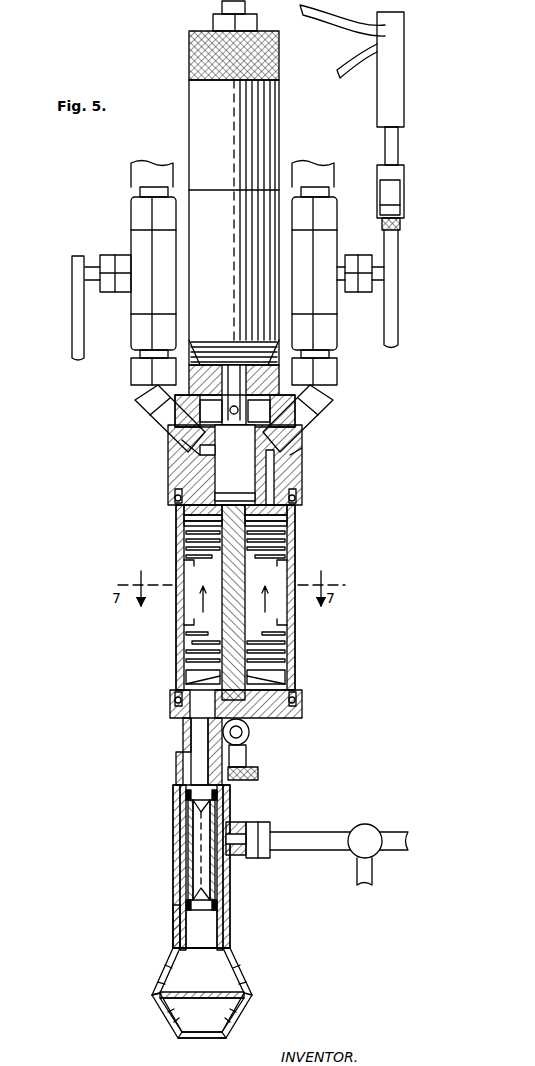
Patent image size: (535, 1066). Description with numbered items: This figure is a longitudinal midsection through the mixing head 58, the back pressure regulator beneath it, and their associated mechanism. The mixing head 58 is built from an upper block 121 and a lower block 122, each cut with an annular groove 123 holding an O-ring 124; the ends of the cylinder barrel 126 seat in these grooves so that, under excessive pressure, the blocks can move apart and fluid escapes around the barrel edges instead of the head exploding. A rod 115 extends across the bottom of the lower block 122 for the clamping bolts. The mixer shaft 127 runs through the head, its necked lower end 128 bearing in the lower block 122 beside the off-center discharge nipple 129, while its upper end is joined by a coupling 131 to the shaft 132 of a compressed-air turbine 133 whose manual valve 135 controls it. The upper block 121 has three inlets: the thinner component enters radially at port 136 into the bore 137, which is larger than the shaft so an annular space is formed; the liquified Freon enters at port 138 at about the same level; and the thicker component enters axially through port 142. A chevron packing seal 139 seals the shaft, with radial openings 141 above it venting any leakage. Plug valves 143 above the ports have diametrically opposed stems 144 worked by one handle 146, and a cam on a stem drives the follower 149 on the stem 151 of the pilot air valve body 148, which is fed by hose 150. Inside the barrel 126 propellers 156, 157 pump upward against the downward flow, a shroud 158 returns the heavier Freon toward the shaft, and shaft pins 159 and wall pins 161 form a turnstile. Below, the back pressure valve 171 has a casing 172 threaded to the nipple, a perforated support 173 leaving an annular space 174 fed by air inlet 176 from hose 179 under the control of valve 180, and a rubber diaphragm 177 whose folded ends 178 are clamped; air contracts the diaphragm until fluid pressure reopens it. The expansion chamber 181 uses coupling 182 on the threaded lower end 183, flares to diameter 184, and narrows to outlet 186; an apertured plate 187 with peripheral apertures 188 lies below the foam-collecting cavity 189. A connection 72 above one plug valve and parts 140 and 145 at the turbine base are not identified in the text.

The mixing head 58 is at (300, 512).
The valve 72 is at (314, 170).
The rod 115 is at (248, 740).
The upper block 121 is at (172, 478).
The lower block 122 is at (283, 718).
The annular groove 123 is at (296, 491).
The O-ring 124 is at (296, 498).
The cylinder barrel 126 is at (294, 636).
The mixer shaft 127 is at (240, 602).
The lower end of shaft 128 is at (248, 719).
The discharge nipple 129 is at (185, 740).
The coupling 131 is at (246, 416).
The turbine shaft 132 is at (243, 352).
The air turbine 133 is at (238, 252).
The manual valve 135 is at (192, 52).
The thinner component port 136 is at (200, 452).
The bore 137 is at (222, 497).
The Freon port 138 is at (292, 462).
The chevron packing seal 139 is at (215, 442).
The thread 140 is at (210, 352).
The radial openings 141 is at (190, 421).
The thicker component port 142 is at (275, 472).
The plug valves 143 is at (140, 250).
The valve stems 144 is at (98, 268).
The lower body 145 is at (197, 406).
The actuating handle 146 is at (78, 342).
The pilot air valve body 148 is at (382, 90).
The cam follower 149 is at (388, 200).
The hose 150 is at (352, 30).
The pilot valve stem 151 is at (392, 145).
The upper agitator propeller 156 is at (200, 524).
The lower agitator propeller 157 is at (210, 682).
The annular shroud 158 is at (205, 519).
The radially extending pins 159 is at (286, 549).
The radially inward extending pins 161 is at (190, 643).
The back pressure valve 171 is at (171, 880).
The outer tubular casing 172 is at (190, 893).
The tubular perforated support 173 is at (180, 764).
The annular space 174 is at (177, 818).
The compressed air inlet 176 is at (238, 828).
The resilient tubular diaphragm 177 is at (190, 856).
The diaphragm ends 178 is at (187, 794).
The air hose 179 is at (320, 847).
The air control valve 180 is at (357, 853).
The expansion chamber 181 is at (245, 970).
The coupling 182 is at (178, 940).
The lower end of valve body 183 is at (219, 926).
The increased diameter 184 is at (156, 994).
The outlet diameter 186 is at (172, 1040).
The apertured plate 187 is at (202, 1015).
The apertures 188 is at (242, 992).
The cavity 189 is at (207, 962).